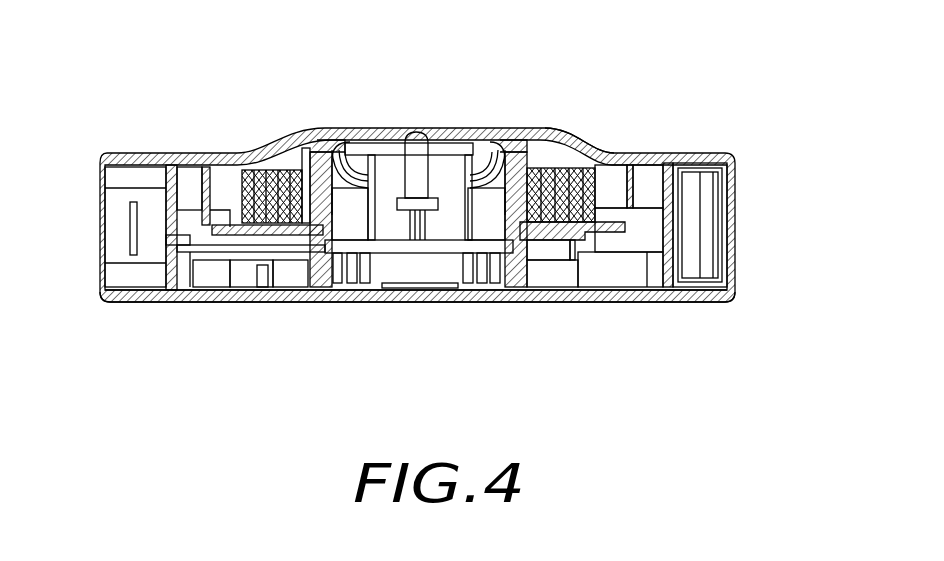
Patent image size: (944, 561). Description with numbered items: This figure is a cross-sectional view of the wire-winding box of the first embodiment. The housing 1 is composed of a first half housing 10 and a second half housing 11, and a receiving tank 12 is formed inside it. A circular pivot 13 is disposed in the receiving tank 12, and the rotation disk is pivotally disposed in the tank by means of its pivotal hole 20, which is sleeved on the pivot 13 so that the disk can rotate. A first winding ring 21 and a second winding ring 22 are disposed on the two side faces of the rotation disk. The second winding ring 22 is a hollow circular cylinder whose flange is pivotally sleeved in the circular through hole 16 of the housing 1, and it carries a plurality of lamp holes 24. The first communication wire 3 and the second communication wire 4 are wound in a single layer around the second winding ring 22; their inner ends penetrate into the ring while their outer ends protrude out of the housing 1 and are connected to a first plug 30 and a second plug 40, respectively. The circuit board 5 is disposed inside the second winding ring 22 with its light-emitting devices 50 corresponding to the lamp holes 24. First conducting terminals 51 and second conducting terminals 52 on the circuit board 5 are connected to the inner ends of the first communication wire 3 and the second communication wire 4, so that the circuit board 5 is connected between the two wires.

The housing 1 is at (663, 128).
The first communication wire 3 is at (542, 140).
The second communication wire 4 is at (580, 138).
The circuit board 5 is at (420, 245).
The first half housing 10 is at (222, 190).
The second half housing 11 is at (165, 302).
The receiving tank 12 is at (167, 155).
The circular pivot 13 is at (373, 300).
The circular through hole 16 is at (497, 190).
The pivotal hole 20 is at (415, 257).
The first winding ring 21 is at (320, 297).
The second winding ring 22 is at (303, 128).
The lamp holes 24 is at (428, 170).
The first plug 30 is at (130, 227).
The second plug 40 is at (715, 225).
The light-emitting devices 50 is at (417, 167).
The first conducting terminals 51 is at (333, 150).
The second conducting terminals 52 is at (478, 170).